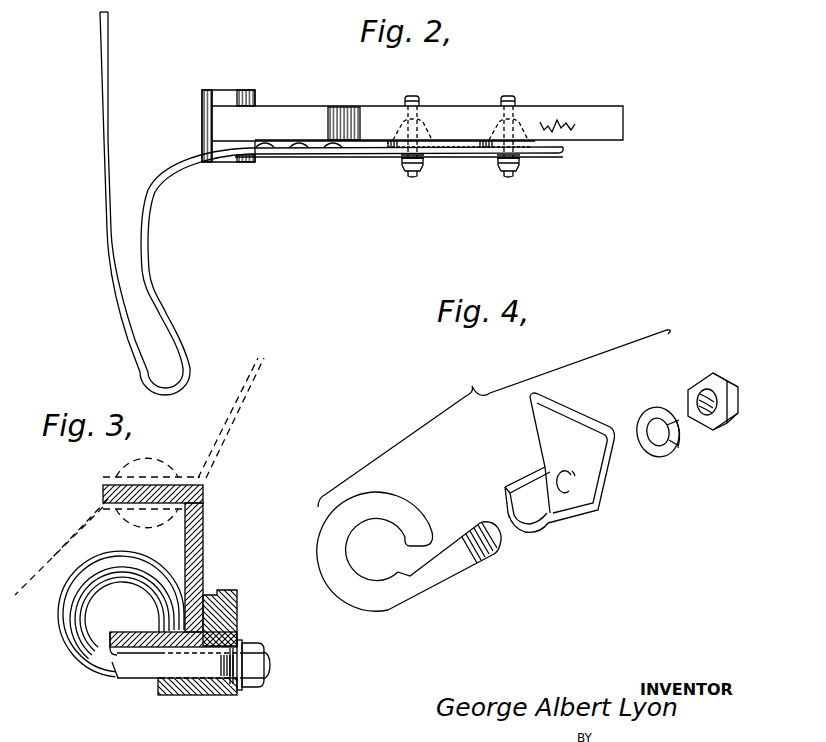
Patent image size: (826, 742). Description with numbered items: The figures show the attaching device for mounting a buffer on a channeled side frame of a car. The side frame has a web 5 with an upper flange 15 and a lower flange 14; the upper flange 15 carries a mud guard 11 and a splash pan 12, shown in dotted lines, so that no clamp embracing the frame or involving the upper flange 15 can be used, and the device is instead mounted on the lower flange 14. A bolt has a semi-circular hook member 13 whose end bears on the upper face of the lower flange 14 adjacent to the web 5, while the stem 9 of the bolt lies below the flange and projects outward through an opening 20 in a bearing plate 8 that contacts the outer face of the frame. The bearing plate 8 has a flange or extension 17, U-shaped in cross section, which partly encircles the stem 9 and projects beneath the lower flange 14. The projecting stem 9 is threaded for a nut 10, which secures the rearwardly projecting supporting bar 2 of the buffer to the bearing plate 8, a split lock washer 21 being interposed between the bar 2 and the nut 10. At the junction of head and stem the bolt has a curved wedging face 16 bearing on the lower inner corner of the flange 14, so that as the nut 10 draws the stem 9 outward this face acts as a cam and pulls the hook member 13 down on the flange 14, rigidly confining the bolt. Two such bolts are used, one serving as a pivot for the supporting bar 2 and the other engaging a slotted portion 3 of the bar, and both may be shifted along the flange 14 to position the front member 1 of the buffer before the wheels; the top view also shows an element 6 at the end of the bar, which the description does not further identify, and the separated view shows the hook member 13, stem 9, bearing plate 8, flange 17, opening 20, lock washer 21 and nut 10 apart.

In FIG. 2, the front member 1 is at (100, 113).
In FIG. 2, the supporting bar 2 is at (366, 152).
In FIG. 3, the supporting bar 2 is at (238, 695).
In FIG. 2, the portion of the bar 3 is at (566, 151).
In FIG. 2, the web 5 is at (623, 126).
In FIG. 3, the web 5 is at (204, 546).
In FIG. 2, the clamp block 6 is at (202, 118).
In FIG. 2, the bearing plate 8 is at (398, 148).
In FIG. 3, the bearing plate 8 is at (216, 590).
In FIG. 4, the bearing plate 8 is at (557, 415).
In FIG. 2, the stem 9 is at (411, 178).
In FIG. 3, the stem 9 is at (215, 680).
In FIG. 4, the stem 9 is at (462, 557).
In FIG. 2, the nut 10 is at (423, 166).
In FIG. 3, the nut 10 is at (265, 648).
In FIG. 4, the nut 10 is at (736, 408).
In FIG. 3, the mud guard 11 is at (232, 428).
In FIG. 3, the splash pan 12 is at (55, 560).
In FIG. 2, the hook member 13 is at (500, 98).
In FIG. 3, the hook member 13 is at (155, 590).
In FIG. 4, the hook member 13 is at (388, 522).
In FIG. 3, the lower flange 14 is at (108, 648).
In FIG. 2, the upper flange 15 is at (326, 106).
In FIG. 3, the upper flange 15 is at (103, 494).
In FIG. 3, the curved wedging face 16 is at (115, 664).
In FIG. 2, the flange or extension 17 is at (494, 124).
In FIG. 3, the flange or extension 17 is at (175, 696).
In FIG. 4, the flange or extension 17 is at (560, 515).
In FIG. 3, the opening 20 is at (241, 640).
In FIG. 4, the opening 20 is at (574, 483).
In FIG. 2, the split lock washer 21 is at (396, 165).
In FIG. 3, the split lock washer 21 is at (241, 645).
In FIG. 4, the split lock washer 21 is at (670, 455).